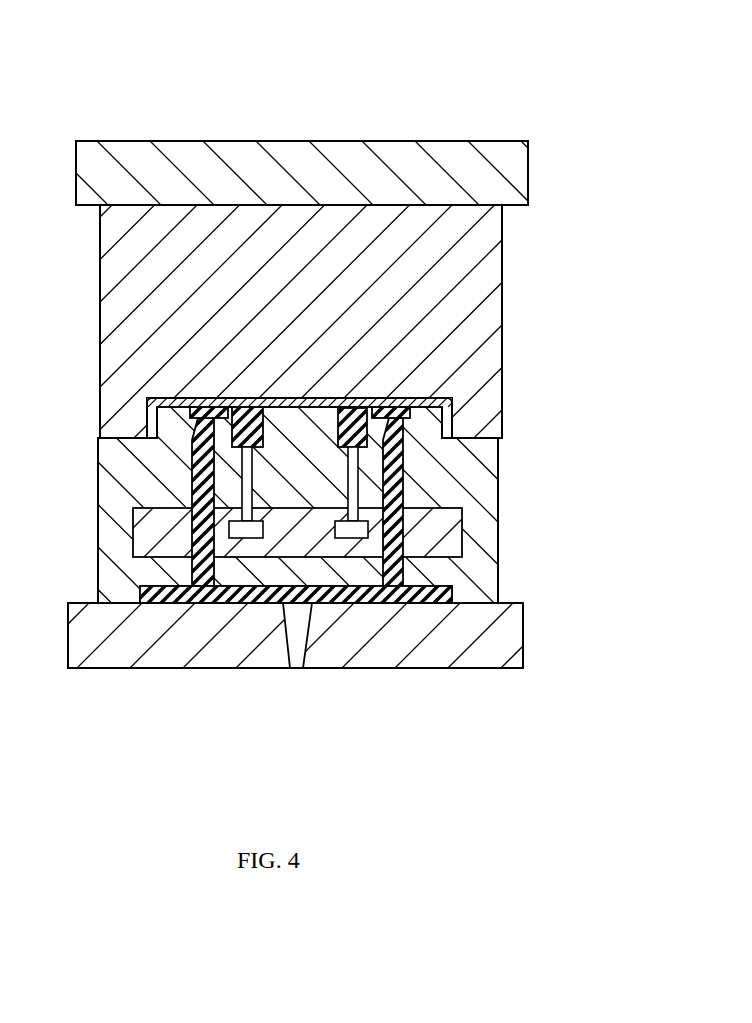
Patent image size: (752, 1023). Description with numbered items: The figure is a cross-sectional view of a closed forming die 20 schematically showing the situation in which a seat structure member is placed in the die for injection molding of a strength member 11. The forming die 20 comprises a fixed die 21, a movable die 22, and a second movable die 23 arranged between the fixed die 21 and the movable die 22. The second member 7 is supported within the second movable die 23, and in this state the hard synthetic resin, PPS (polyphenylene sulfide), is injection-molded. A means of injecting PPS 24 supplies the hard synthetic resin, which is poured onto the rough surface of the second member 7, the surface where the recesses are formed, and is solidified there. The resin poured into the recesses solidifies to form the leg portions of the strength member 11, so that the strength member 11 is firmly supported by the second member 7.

The forming die 20 is at (376, 340).
The movable die 22 is at (497, 277).
The second movable die 23 is at (492, 489).
The means of injecting PPS 24 is at (410, 533).
The strength member 11 is at (241, 404).
The second member 7 is at (175, 398).
The fixed die 21 is at (505, 641).